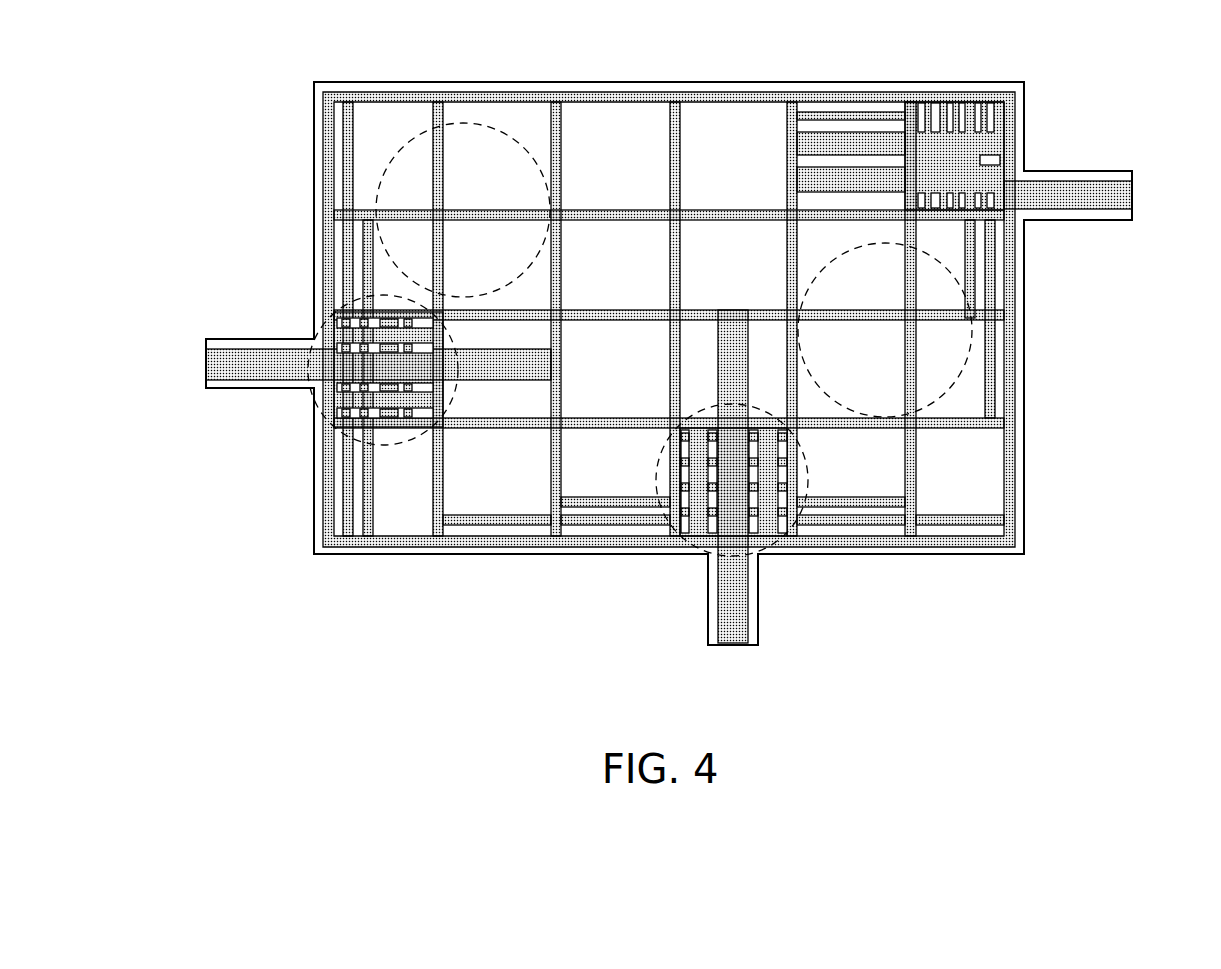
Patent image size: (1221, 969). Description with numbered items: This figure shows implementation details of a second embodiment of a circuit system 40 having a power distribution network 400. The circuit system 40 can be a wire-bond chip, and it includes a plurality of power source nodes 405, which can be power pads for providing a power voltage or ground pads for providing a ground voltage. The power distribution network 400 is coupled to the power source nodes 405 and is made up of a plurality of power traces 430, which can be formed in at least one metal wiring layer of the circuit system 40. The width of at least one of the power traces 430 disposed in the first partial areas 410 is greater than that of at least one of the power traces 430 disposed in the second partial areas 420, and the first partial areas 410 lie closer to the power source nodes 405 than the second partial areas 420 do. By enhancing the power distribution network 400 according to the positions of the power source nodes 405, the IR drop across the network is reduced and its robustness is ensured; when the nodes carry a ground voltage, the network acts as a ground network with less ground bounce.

The circuit system 40 is at (880, 82).
The power distribution network 400 is at (821, 118).
The power source nodes 405 is at (206, 366).
The first partial areas 410 is at (414, 448).
The second partial areas 420 is at (809, 263).
The power traces 430 is at (345, 176).